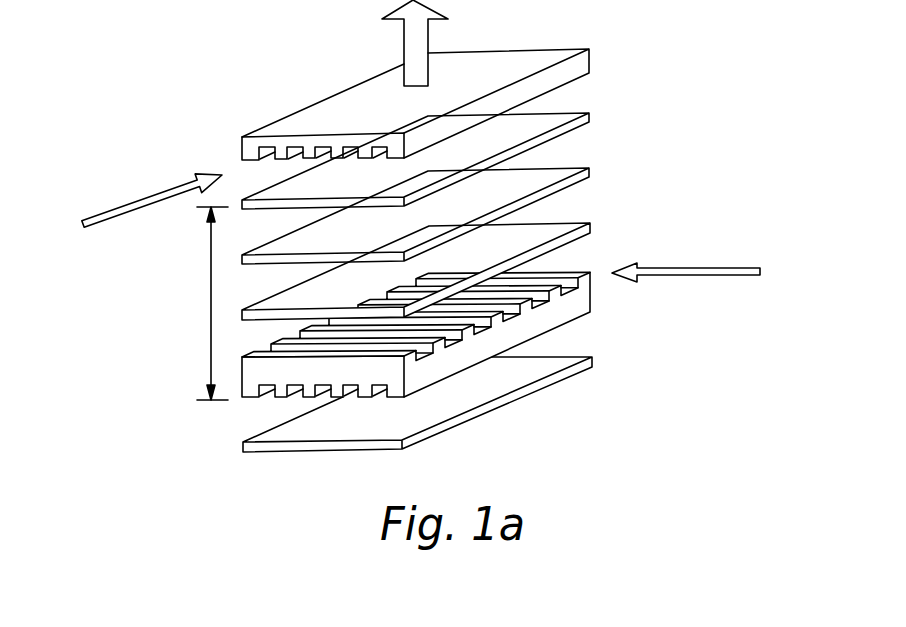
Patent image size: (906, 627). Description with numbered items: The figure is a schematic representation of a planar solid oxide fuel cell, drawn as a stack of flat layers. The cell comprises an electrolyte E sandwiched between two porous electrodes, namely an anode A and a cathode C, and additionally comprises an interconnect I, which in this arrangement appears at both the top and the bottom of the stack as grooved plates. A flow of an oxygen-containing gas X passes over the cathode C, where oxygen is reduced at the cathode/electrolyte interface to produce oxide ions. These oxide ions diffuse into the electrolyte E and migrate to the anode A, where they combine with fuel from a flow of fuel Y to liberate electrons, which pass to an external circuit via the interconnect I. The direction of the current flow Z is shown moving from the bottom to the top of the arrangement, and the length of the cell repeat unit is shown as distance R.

The interconnect I is at (592, 62).
The anode A is at (590, 119).
The electrolyte E is at (590, 175).
The cathode C is at (588, 230).
The distance R is at (211, 302).
The flow of an oxygen-containing gas X is at (710, 268).
The flow of fuel Y is at (135, 202).
The direction of the current flow Z is at (402, 42).